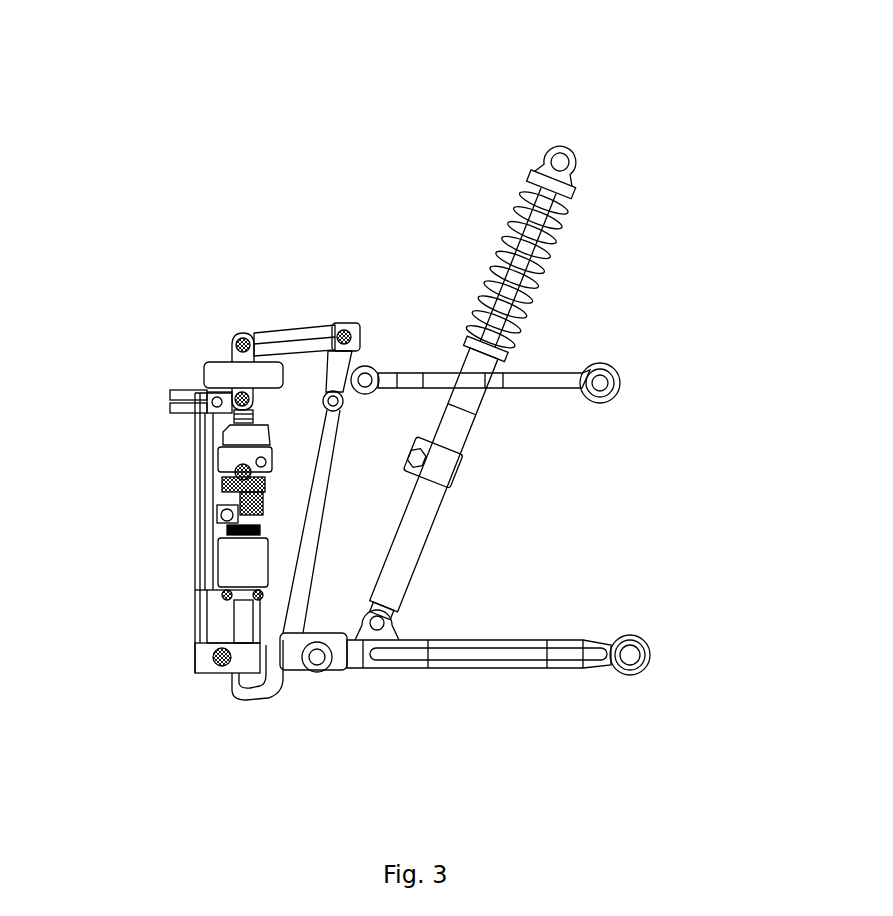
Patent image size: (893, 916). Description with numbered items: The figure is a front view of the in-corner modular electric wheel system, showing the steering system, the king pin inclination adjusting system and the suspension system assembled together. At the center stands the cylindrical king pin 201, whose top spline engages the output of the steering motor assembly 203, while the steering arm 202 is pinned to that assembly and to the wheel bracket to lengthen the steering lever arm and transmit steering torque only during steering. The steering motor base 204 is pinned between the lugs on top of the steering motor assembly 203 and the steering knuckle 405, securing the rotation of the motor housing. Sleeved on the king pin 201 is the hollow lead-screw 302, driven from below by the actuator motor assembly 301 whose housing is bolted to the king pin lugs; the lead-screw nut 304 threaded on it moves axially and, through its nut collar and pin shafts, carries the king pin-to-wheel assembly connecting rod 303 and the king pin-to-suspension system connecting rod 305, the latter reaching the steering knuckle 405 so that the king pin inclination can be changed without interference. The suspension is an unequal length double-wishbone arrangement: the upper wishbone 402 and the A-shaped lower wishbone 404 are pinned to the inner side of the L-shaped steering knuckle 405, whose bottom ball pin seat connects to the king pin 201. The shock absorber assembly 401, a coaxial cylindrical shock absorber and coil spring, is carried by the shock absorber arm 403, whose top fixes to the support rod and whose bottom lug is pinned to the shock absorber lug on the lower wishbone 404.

The king pin 201 is at (243, 630).
The steering arm 202 is at (239, 393).
The steering motor assembly 203 is at (243, 372).
The steering motor base 204 is at (257, 341).
The actuator motor assembly 301 is at (242, 548).
The lead-screw 302 is at (243, 520).
The king pin-to-wheel assembly connecting rod 303 is at (238, 487).
The lead-screw nut 304 is at (261, 465).
The king pin-to-suspension system connecting rod 305 is at (266, 443).
The shock absorber assembly 401 is at (521, 250).
The upper wishbone 402 is at (528, 380).
The shock absorber arm 403 is at (402, 562).
The lower wishbone 404 is at (565, 650).
The steering knuckle 405 is at (297, 602).